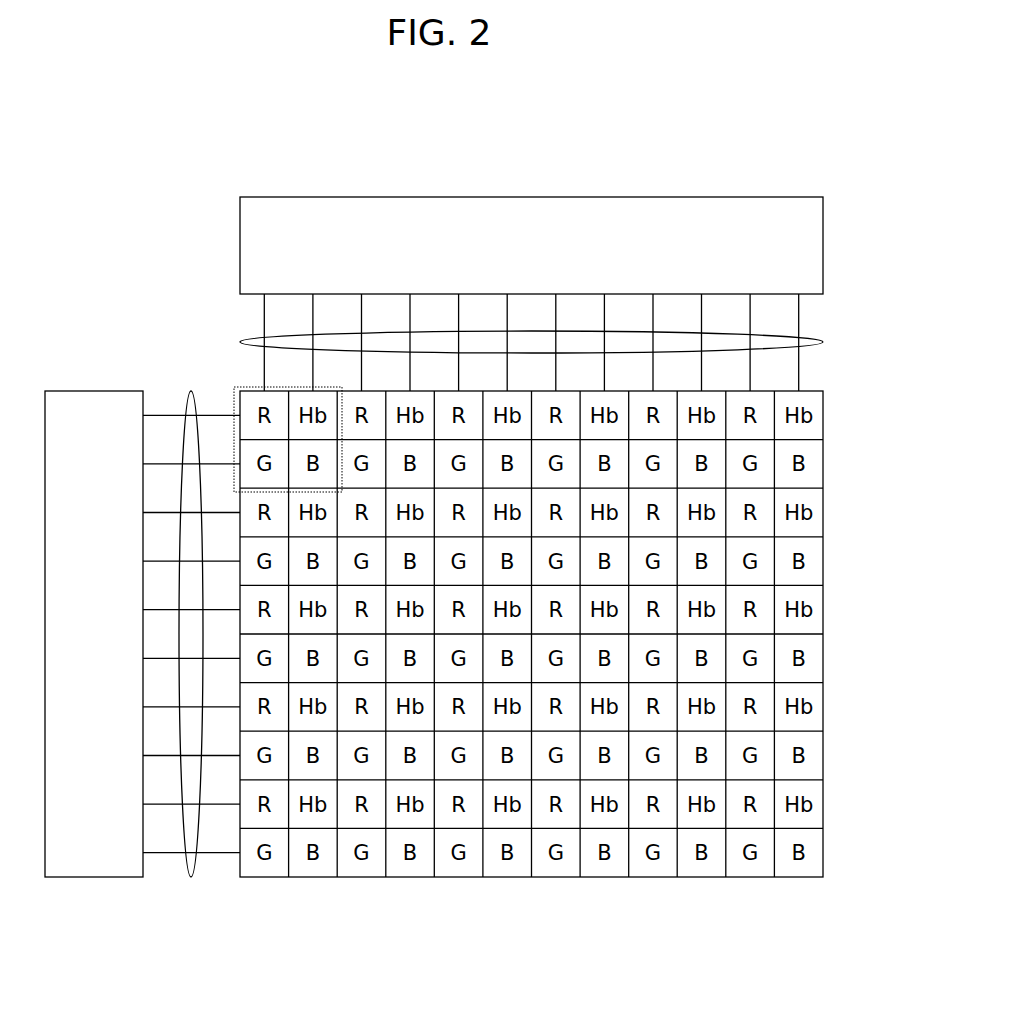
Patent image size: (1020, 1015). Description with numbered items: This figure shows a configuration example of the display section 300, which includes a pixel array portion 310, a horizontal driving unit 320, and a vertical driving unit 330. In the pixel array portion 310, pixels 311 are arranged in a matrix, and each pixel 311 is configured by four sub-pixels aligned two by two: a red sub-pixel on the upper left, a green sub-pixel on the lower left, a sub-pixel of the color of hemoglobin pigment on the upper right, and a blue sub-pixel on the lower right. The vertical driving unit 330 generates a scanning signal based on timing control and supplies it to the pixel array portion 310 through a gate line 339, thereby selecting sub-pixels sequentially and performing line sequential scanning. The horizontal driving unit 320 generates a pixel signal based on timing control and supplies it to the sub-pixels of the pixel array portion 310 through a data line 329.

The display section 300 is at (579, 171).
The horizontal driving unit 320 is at (751, 197).
The data line 329 is at (253, 338).
The vertical driving unit 330 is at (78, 391).
The gate line 339 is at (176, 391).
The pixel 311 is at (253, 388).
The pixel array portion 310 is at (506, 878).